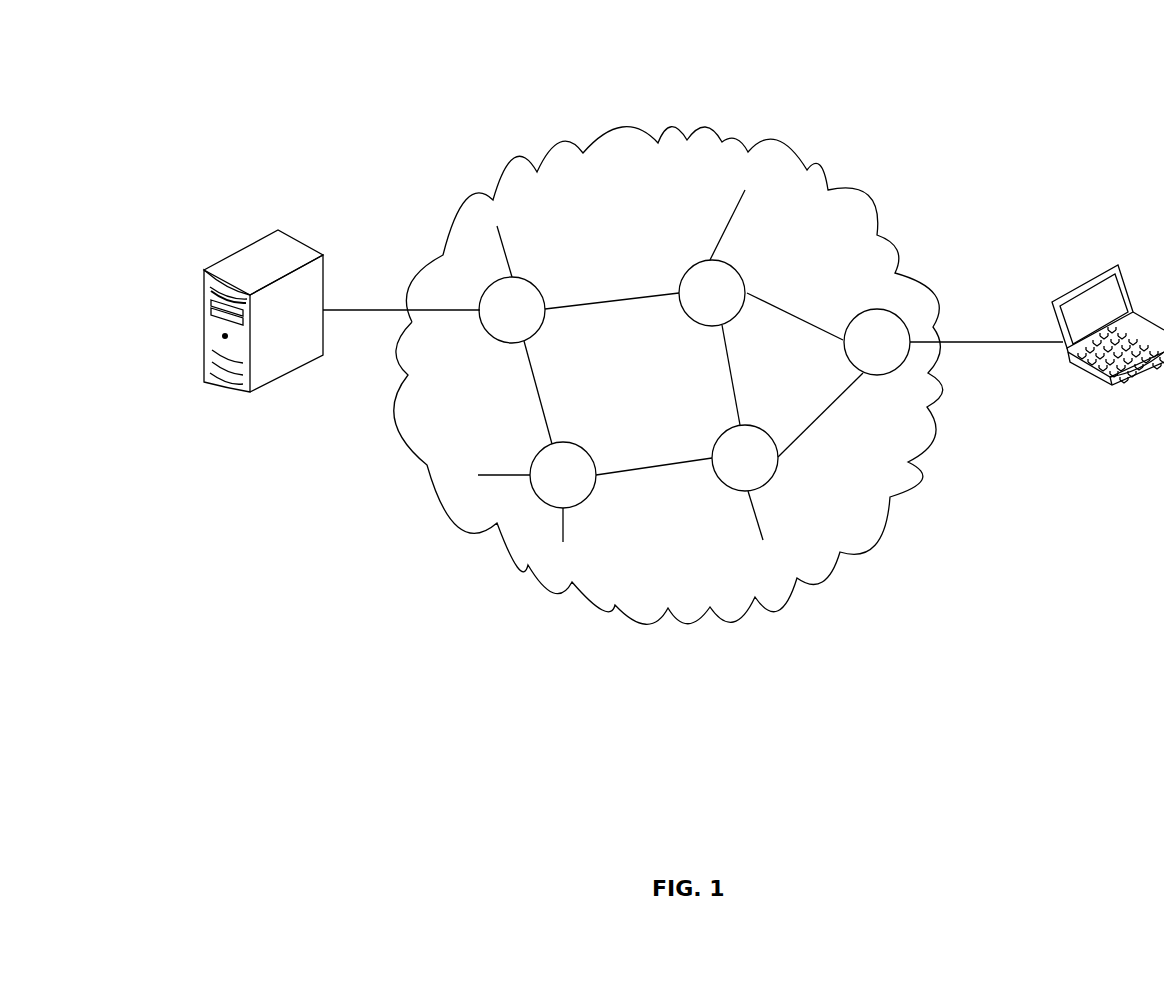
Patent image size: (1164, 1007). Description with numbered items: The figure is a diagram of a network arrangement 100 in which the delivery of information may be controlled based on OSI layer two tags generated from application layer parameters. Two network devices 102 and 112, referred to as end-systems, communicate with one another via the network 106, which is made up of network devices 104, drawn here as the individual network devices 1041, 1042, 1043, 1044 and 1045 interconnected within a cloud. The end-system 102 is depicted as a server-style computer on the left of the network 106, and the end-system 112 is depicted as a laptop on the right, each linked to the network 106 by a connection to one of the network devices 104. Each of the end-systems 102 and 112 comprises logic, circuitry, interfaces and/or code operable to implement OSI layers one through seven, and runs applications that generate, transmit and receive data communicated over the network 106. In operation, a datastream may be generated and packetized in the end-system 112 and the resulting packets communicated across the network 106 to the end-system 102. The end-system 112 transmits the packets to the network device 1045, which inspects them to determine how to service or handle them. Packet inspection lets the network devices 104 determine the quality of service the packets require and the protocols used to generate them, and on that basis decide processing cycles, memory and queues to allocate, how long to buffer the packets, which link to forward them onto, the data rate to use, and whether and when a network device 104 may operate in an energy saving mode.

The system 100 is at (214, 81).
The network device 102 is at (228, 256).
The network devices 104 is at (694, 366).
The network device 1041 is at (530, 320).
The network device 1042 is at (581, 485).
The network device 1043 is at (730, 303).
The network device 1044 is at (763, 468).
The network device 1045 is at (895, 352).
The network 106 is at (625, 128).
The network device 112 is at (1083, 282).